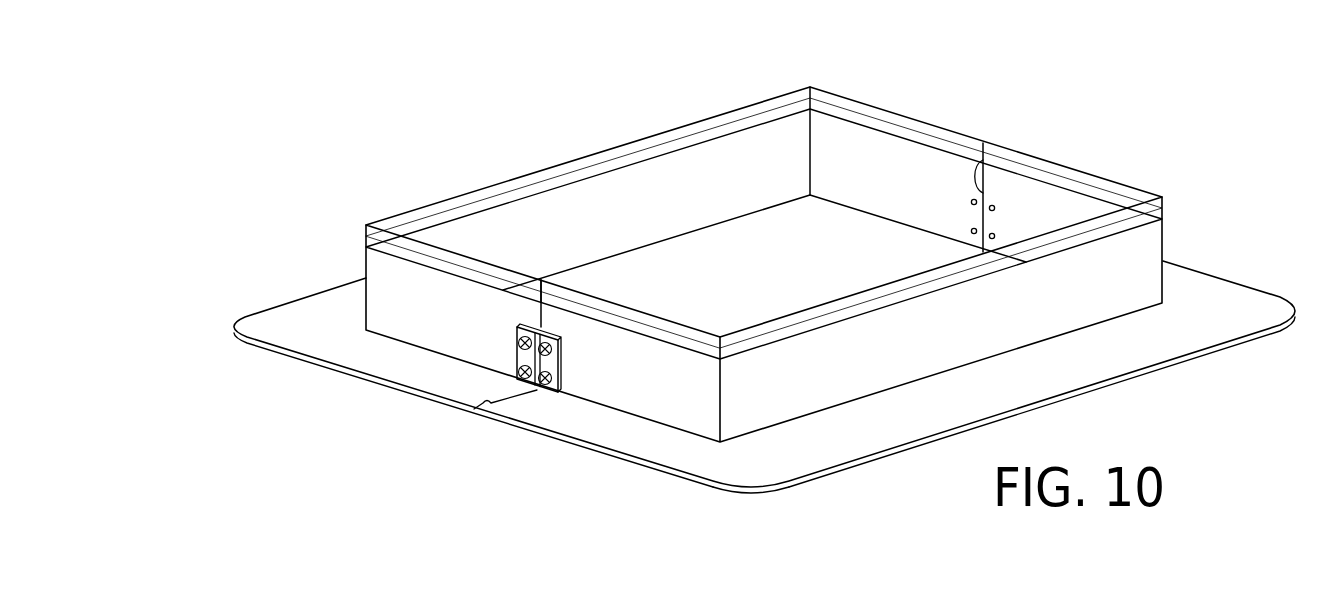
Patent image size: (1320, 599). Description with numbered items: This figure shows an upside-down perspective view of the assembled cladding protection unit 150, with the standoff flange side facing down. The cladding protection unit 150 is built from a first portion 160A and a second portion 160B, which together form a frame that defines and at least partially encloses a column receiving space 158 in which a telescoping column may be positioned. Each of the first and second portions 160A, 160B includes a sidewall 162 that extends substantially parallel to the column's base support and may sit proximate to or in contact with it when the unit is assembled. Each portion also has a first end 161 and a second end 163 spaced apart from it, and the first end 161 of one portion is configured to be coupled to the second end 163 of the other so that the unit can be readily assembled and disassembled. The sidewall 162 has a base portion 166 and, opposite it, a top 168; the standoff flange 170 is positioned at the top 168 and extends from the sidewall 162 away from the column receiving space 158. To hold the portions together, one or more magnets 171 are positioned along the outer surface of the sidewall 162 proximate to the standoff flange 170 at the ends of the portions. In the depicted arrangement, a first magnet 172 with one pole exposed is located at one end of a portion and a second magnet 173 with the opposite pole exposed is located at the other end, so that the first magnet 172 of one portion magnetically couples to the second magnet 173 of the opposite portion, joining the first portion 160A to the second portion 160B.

The cladding protection unit 150 is at (799, 227).
The column receiving space 158 is at (860, 163).
The first portion 160A is at (331, 419).
The second portion 160B is at (513, 457).
The first end 161 is at (978, 160).
The sidewall 162 is at (700, 222).
The second end 163 is at (985, 148).
The base portion 166 is at (656, 130).
The top 168 is at (300, 356).
The standoff flange 170 is at (722, 396).
The magnets 171 is at (508, 367).
The first magnet 172 is at (560, 362).
The second magnet 173 is at (520, 345).